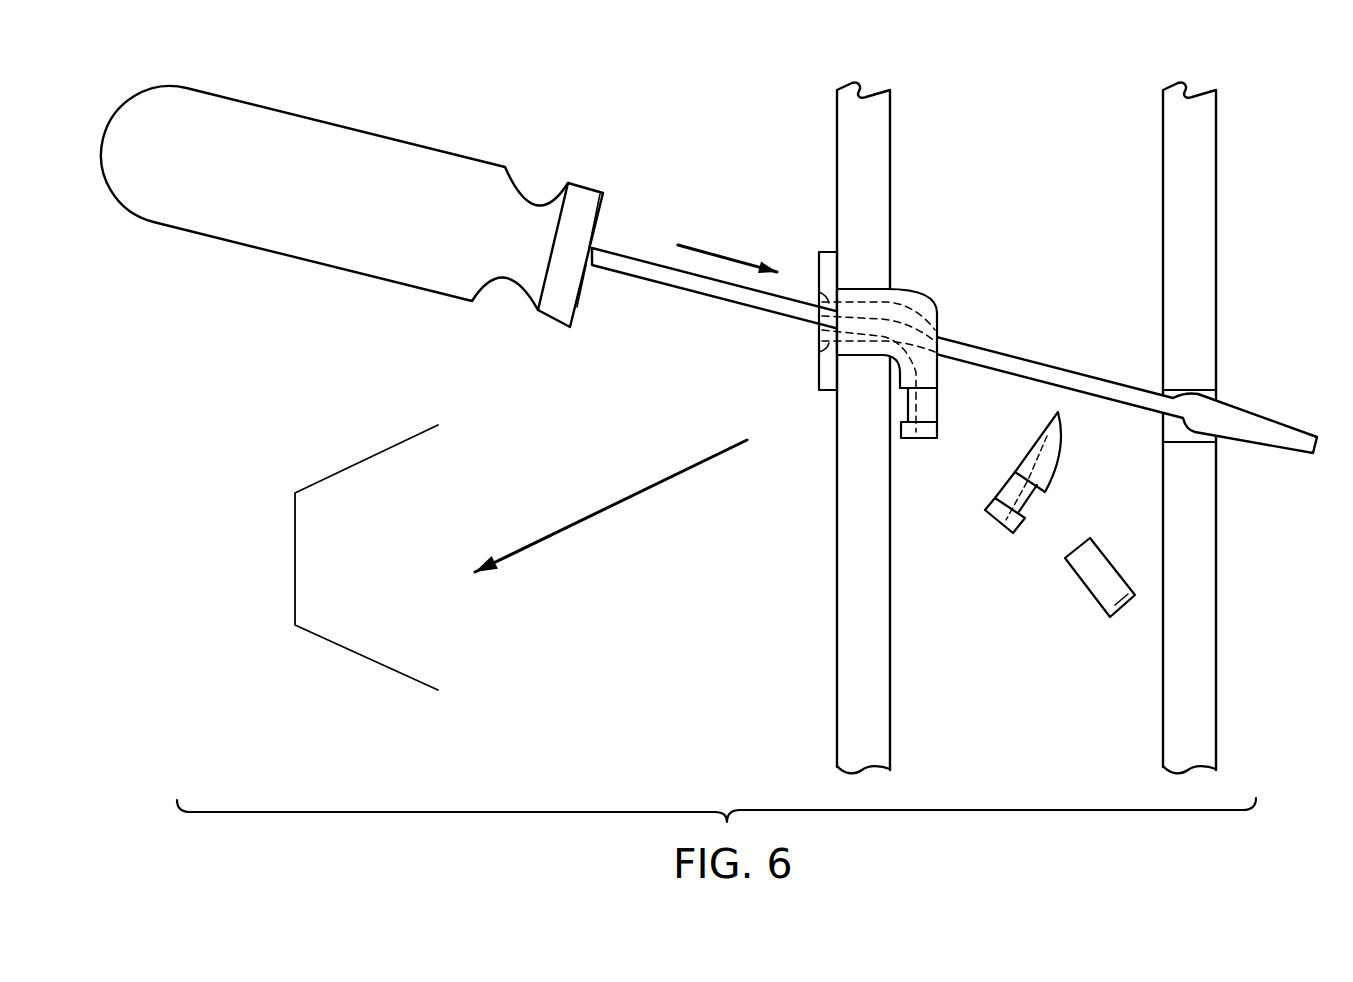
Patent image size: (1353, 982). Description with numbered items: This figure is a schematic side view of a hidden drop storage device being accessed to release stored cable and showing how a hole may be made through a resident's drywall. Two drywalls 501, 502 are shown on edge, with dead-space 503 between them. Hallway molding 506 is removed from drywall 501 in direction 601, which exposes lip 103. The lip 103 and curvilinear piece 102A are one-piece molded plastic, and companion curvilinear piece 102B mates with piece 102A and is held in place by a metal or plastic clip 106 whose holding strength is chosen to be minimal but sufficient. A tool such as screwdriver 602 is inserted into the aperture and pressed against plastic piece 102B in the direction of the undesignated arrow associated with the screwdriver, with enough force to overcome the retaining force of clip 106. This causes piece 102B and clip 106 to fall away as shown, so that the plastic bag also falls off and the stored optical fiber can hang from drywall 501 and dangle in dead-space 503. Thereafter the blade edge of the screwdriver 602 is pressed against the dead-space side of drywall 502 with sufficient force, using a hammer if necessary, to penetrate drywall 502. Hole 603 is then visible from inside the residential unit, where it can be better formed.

The curvilinear piece 102A is at (924, 302).
The companion curvilinear piece 102B is at (1059, 470).
The lip 103 is at (820, 377).
The clip 106 is at (1087, 587).
The drywall 501 is at (836, 700).
The drywall 502 is at (1163, 691).
The dead-space 503 is at (1113, 307).
The hallway molding 506 is at (387, 668).
The direction 601 is at (635, 492).
The screwdriver 602 is at (672, 290).
The hole 603 is at (1183, 443).